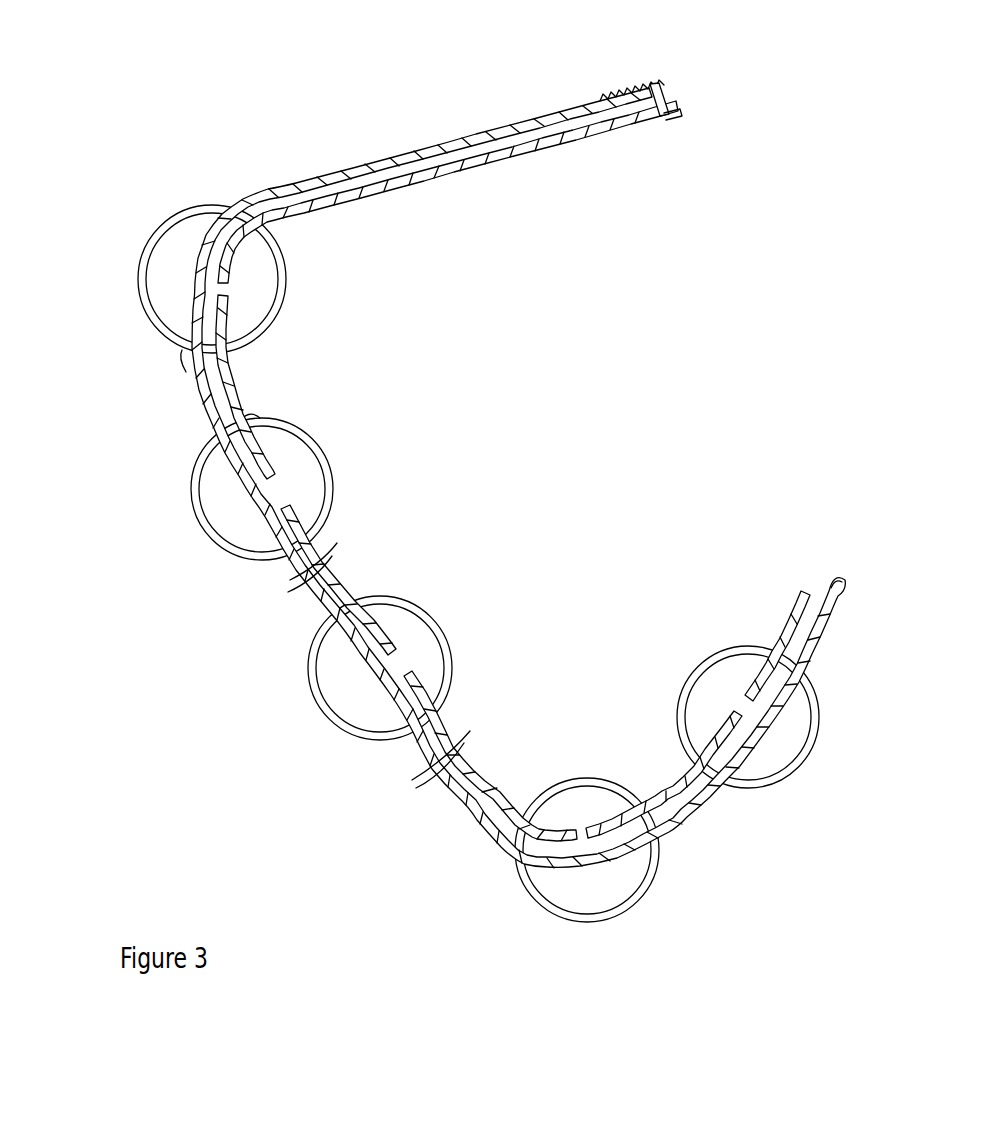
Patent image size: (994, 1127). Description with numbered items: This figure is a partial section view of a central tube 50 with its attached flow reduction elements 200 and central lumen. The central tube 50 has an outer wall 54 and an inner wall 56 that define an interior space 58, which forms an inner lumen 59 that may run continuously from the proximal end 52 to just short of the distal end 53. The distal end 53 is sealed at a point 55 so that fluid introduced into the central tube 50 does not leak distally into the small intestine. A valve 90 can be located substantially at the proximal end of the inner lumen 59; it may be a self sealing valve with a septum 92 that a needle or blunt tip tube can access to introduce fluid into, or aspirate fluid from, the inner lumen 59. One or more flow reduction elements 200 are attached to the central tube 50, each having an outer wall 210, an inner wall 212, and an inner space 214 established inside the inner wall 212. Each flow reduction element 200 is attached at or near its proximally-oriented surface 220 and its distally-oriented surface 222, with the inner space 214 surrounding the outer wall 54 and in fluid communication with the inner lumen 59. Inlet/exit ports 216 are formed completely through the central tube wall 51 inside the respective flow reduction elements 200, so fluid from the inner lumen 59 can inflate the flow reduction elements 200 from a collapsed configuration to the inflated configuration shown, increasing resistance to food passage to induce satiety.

The central tube 50 is at (518, 439).
The central tube wall 51 is at (393, 655).
The proximal end 52 is at (615, 88).
The distal end 53 is at (838, 570).
The outer wall 54 is at (513, 471).
The point 55 is at (810, 590).
The inner wall 56 is at (518, 466).
The interior space 58 is at (357, 180).
The inner lumen 59 is at (400, 175).
The valve 90 is at (665, 116).
The septum 92 is at (663, 97).
The flow reduction element 200 is at (257, 468).
The outer wall 210 is at (262, 489).
The inner wall 212 is at (262, 489).
The inner space 214 is at (219, 468).
The inlet/exit port 216 is at (400, 660).
The proximally-oriented surface 220 is at (250, 412).
The distally-oriented surface 222 is at (287, 573).